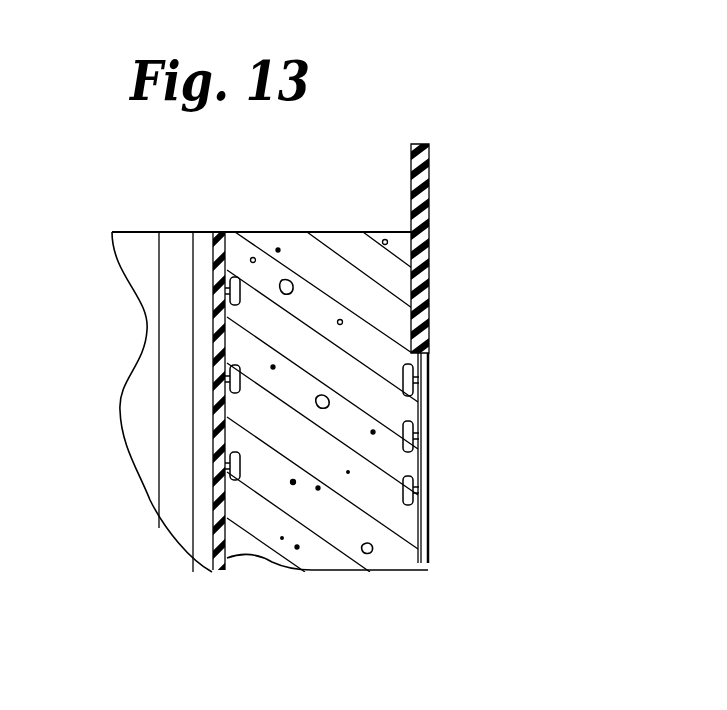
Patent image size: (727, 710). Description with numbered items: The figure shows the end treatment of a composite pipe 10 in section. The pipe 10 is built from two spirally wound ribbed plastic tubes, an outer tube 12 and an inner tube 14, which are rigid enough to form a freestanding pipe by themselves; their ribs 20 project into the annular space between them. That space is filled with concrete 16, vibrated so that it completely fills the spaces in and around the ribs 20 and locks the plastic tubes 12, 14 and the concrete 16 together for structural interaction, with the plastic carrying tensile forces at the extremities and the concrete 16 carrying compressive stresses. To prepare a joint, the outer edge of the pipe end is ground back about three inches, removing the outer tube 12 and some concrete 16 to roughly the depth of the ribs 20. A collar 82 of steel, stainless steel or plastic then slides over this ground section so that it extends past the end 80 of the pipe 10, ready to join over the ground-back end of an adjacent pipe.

The pipe 10 is at (318, 407).
The outer tube 12 is at (430, 465).
The inner tube 14 is at (228, 250).
The concrete 16 is at (300, 555).
The ribs 20 is at (234, 386).
The pipe end 80 is at (330, 230).
The collar 82 is at (430, 183).